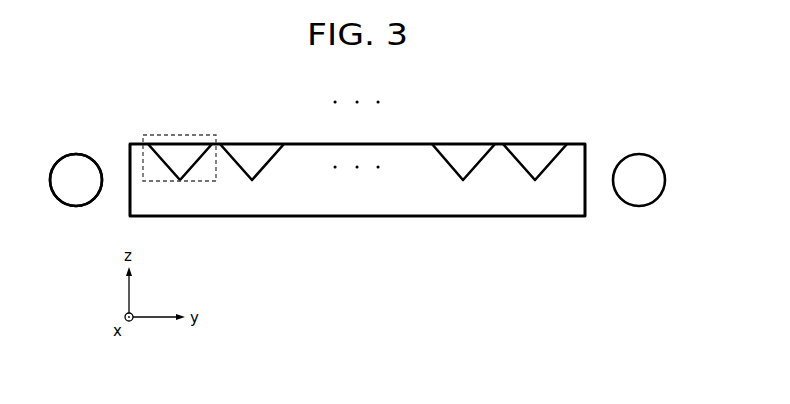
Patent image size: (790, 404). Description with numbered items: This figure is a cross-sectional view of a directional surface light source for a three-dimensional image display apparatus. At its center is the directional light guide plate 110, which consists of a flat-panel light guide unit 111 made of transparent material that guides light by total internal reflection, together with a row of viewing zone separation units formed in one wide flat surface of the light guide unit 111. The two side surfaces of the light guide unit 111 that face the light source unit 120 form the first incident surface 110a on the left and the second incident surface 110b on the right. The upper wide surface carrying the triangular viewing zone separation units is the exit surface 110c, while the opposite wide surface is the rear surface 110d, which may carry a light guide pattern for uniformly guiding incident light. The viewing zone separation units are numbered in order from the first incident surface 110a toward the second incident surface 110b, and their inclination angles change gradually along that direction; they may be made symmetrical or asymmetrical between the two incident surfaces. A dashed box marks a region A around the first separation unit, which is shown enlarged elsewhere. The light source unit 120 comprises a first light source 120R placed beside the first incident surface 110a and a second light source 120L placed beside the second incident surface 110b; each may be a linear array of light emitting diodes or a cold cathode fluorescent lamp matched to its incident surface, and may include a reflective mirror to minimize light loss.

The directional light guide plate 110 is at (283, 223).
The first incident surface 110a is at (128, 160).
The second incident surface 110b is at (586, 168).
The exit surface 110c is at (562, 145).
The rear surface 110d is at (532, 217).
The light guide unit 111 is at (360, 202).
The light source unit 120 is at (42, 269).
The first light source 120R is at (63, 202).
The second light source 120L is at (650, 200).
The region A is at (162, 135).